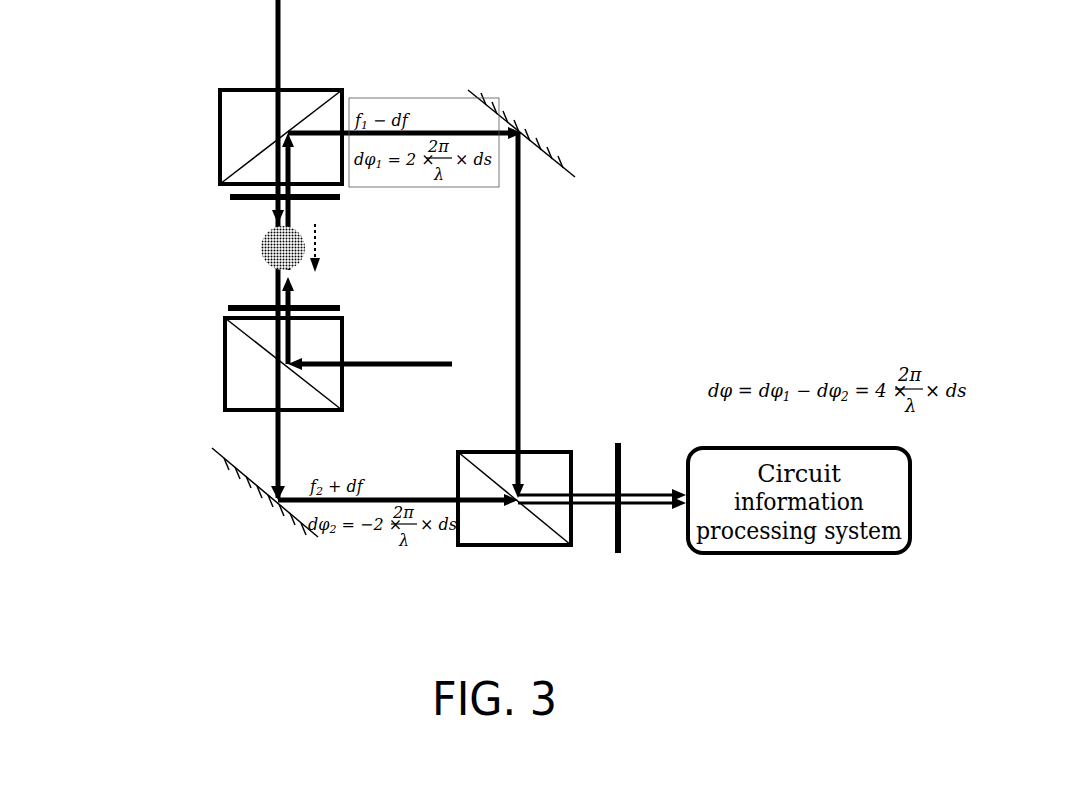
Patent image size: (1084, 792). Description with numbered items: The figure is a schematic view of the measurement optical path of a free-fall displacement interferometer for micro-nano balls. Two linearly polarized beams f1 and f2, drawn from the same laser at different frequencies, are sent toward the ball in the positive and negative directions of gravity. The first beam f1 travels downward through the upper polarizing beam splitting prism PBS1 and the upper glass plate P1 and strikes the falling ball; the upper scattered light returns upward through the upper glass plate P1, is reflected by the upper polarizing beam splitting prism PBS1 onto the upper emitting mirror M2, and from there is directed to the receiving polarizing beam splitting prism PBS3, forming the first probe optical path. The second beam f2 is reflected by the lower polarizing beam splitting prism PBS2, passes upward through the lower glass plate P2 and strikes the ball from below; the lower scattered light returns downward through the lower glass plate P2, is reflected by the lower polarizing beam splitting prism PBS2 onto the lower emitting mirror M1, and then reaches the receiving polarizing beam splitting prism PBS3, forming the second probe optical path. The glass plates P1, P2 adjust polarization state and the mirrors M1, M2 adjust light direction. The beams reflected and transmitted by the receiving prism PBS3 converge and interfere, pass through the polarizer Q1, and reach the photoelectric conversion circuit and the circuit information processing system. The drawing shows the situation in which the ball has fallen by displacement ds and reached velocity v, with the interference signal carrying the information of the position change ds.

The upper polarizing beam splitting prism PBS1 is at (247, 137).
The lower polarizing beam splitting prism PBS2 is at (247, 364).
The receiving polarizing beam splitting prism PBS3 is at (514, 519).
The upper glass plate P1 is at (192, 195).
The lower glass plate P2 is at (192, 304).
The lower emitting mirror M1 is at (256, 492).
The upper emitting mirror M2 is at (527, 133).
The polarizer Q1 is at (616, 484).
The first linearly polarized beam f1 is at (289, 250).
The second linearly polarized beam f2 is at (370, 346).
The position change of the ball ds is at (258, 248).
The velocity of the ball v is at (329, 248).